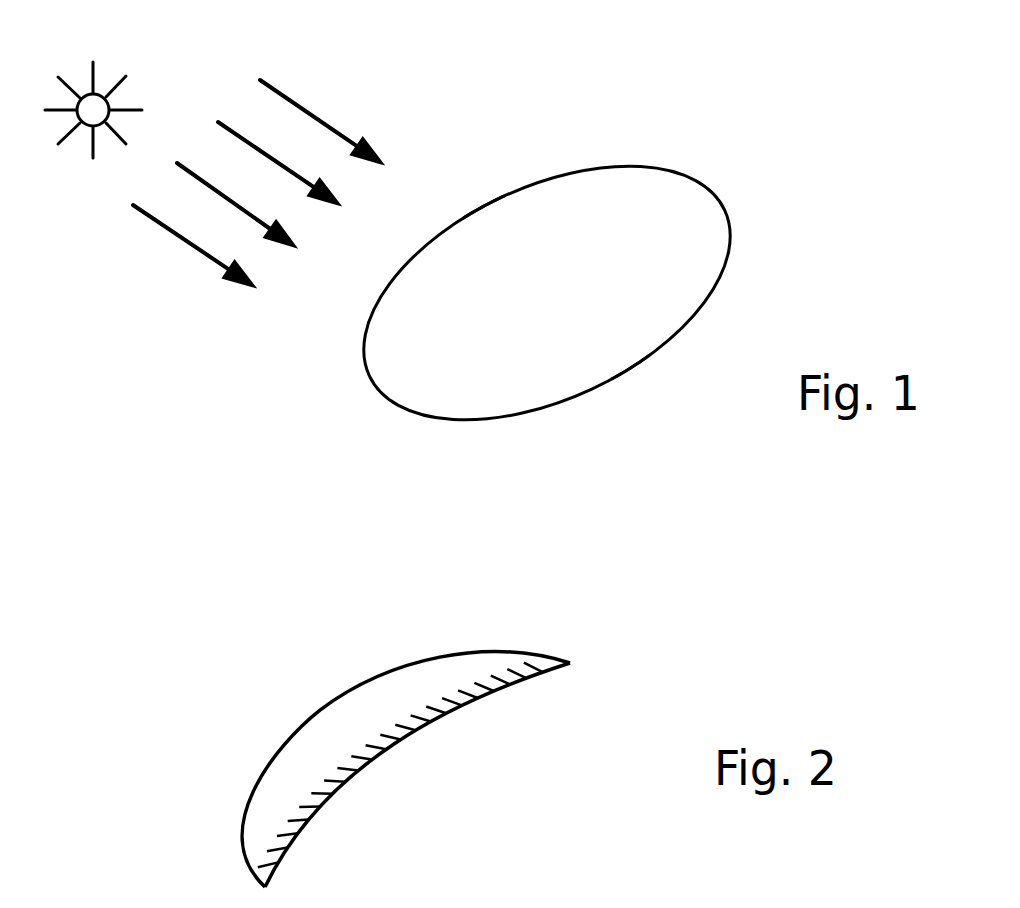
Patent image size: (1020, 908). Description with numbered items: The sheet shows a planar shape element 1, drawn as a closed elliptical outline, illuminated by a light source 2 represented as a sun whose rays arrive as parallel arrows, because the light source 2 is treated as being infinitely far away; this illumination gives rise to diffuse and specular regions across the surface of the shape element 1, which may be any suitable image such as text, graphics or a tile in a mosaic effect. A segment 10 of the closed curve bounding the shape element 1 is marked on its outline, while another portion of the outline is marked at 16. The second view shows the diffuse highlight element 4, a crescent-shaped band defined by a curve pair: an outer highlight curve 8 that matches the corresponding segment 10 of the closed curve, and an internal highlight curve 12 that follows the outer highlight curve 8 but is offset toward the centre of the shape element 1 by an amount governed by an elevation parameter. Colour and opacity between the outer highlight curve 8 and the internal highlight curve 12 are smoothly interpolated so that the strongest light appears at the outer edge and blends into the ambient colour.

In FIG. 1, the light source 2 is at (92, 110).
In FIG. 1, the planar shape element 1 is at (396, 357).
In FIG. 1, the segment of the closed curve 10 is at (483, 208).
In FIG. 1, the second surface of optical element 16 is at (632, 367).
In FIG. 2, the diffuse highlight element 4 is at (380, 761).
In FIG. 2, the outer highlight curve 8 is at (365, 680).
In FIG. 2, the internal highlight curve 12 is at (387, 745).